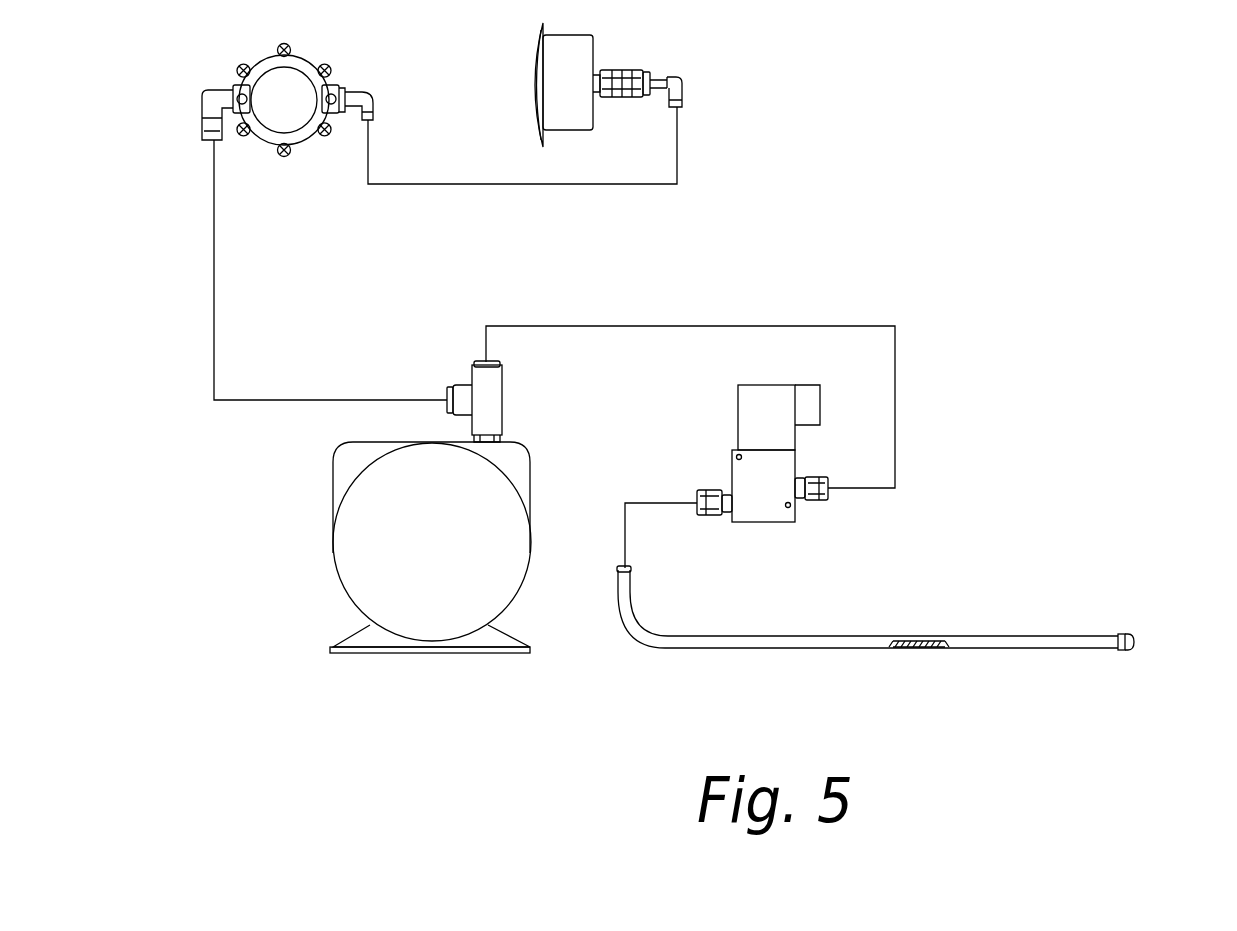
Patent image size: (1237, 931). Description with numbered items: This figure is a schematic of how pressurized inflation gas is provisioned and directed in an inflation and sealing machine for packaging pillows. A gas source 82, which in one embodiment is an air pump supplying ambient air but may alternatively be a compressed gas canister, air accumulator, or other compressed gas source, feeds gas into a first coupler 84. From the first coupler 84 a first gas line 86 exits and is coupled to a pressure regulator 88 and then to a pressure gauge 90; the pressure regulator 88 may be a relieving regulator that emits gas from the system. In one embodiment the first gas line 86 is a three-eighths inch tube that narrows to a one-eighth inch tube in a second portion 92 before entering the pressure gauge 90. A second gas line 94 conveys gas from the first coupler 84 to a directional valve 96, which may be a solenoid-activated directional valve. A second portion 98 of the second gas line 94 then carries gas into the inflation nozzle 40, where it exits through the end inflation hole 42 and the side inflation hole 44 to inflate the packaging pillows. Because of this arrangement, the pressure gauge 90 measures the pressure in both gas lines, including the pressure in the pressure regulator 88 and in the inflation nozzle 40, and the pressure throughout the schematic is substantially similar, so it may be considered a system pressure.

The inflation nozzle 40 is at (1055, 635).
The end inflation hole 42 is at (1136, 640).
The side inflation hole 44 is at (910, 648).
The gas source 82 is at (444, 535).
The first coupler 84 is at (490, 398).
The first gas line 86 is at (285, 400).
The pressure regulator 88 is at (300, 128).
The pressure gauge 90 is at (588, 45).
The second portion 92 is at (655, 184).
The second gas line 94 is at (512, 326).
The directional valve 96 is at (732, 465).
The second portion 98 is at (625, 527).